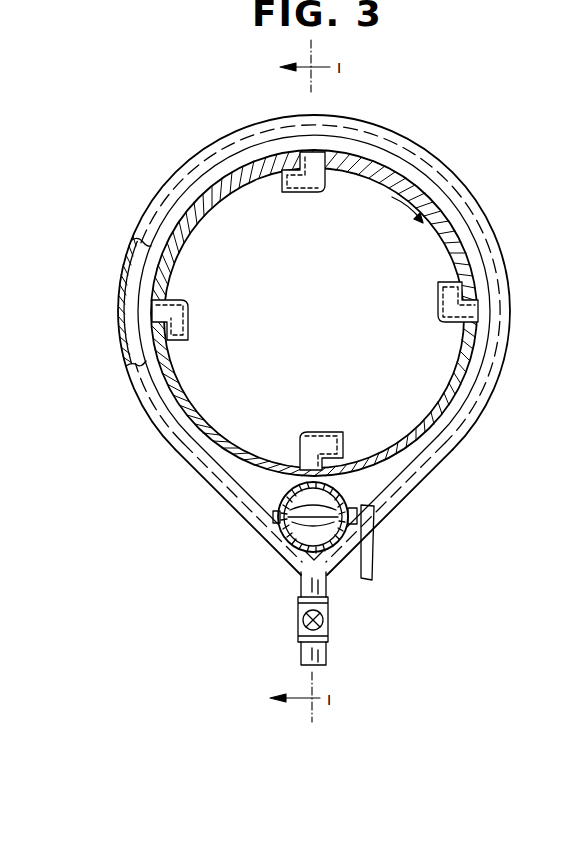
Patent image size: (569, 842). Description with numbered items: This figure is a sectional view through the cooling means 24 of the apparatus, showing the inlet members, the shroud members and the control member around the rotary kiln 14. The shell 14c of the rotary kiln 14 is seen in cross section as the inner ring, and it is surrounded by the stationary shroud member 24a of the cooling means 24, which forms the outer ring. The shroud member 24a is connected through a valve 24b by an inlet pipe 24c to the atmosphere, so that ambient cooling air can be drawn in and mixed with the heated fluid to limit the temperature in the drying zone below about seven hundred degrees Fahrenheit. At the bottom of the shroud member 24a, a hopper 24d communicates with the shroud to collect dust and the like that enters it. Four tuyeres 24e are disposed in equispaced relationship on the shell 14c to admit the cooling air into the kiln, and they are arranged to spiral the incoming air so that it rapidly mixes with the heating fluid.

The rotary kiln 14 is at (461, 172).
The shell 14c is at (437, 208).
The cooling means 24 is at (318, 114).
The shroud member 24a is at (127, 287).
The valve 24b is at (334, 496).
The inlet pipe 24c is at (283, 497).
The hopper 24d is at (284, 549).
The tuyeres 24e is at (300, 186).